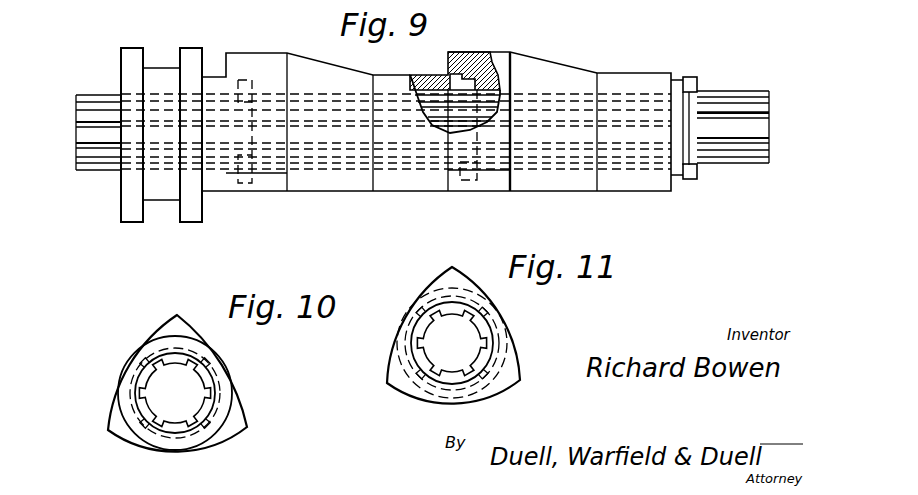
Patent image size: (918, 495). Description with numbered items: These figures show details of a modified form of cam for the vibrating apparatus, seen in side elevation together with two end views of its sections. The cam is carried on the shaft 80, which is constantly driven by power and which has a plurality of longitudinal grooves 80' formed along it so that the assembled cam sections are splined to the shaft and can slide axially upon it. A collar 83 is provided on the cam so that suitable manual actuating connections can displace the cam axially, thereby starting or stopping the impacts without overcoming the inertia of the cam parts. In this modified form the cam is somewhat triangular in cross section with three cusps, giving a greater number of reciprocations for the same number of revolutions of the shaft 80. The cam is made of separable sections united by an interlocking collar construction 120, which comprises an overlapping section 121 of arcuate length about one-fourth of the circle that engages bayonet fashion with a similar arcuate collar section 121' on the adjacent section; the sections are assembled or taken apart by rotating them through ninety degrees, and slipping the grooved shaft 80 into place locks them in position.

In FIG. 9, the shaft 80 is at (421, 127).
In FIG. 9, the grooves 80' is at (424, 128).
In FIG. 9, the collar 83 is at (167, 202).
In FIG. 9, the collar construction 120 is at (448, 75).
In FIG. 10, the overlapping section 121 is at (191, 383).
In FIG. 11, the arcuate collar section 121' is at (468, 335).